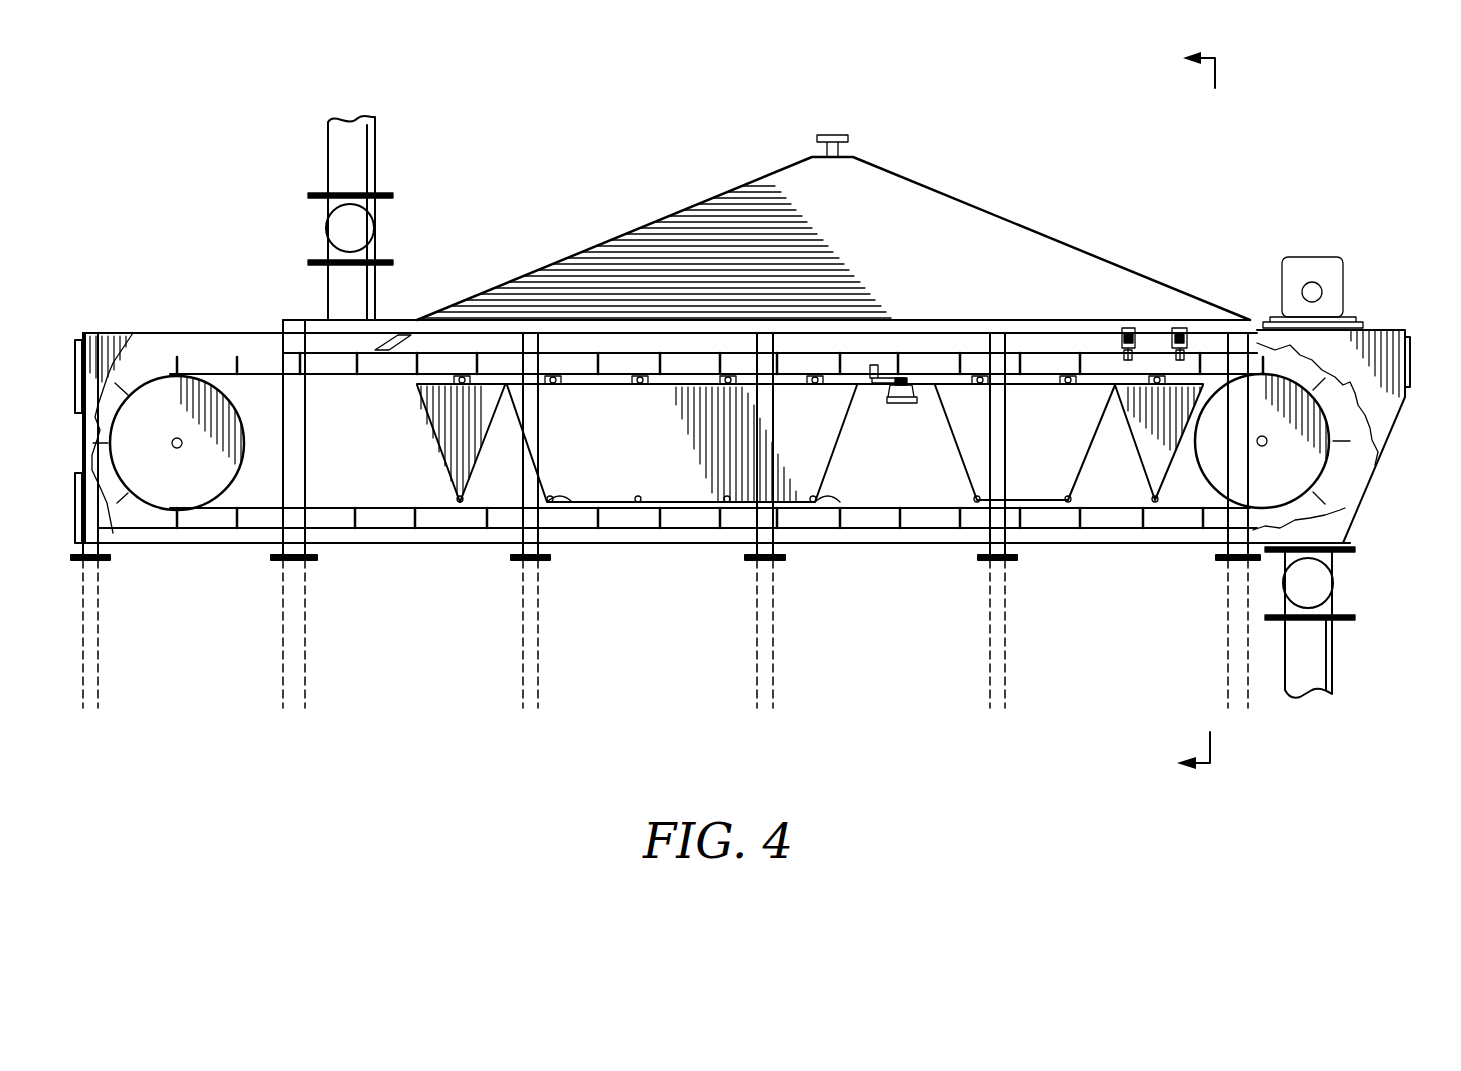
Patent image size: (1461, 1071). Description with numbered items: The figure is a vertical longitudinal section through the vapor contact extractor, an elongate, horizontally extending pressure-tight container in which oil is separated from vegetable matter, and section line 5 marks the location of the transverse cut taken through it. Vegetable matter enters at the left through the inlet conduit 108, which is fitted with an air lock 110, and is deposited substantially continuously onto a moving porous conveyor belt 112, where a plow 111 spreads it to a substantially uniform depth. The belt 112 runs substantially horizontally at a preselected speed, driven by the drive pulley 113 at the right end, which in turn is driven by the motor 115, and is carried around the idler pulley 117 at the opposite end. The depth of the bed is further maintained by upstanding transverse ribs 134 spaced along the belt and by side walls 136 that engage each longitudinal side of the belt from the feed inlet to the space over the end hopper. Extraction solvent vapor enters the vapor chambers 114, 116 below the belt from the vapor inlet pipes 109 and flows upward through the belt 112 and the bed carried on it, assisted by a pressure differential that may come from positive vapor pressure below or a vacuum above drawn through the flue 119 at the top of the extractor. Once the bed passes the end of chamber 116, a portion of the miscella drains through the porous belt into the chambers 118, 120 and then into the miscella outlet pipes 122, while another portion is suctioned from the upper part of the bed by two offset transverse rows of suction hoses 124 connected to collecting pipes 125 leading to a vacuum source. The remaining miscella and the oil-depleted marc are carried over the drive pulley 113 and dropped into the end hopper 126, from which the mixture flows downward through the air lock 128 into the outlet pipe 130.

The section line 5- 5 is at (1182, 410).
The inlet conduit 108 is at (328, 150).
The vapor inlet pipes 109 is at (565, 505).
The air lock 110 is at (327, 228).
The plow 111 is at (392, 335).
The conveyor belt 112 is at (255, 347).
The drive pulley 113 is at (1290, 468).
The vapor chamber 114 is at (432, 432).
The motor 115 is at (1312, 257).
The vapor chamber 116 is at (598, 467).
The idler pulley 117 is at (152, 400).
The chamber 118 is at (950, 450).
The flue 119 is at (833, 135).
The chamber 120 is at (1135, 470).
The miscella outlet pipes 122 is at (640, 497).
The suction hoses 124 is at (1183, 360).
The collecting pipes 125 is at (1180, 328).
The end hopper 126 is at (1350, 487).
The air lock 128 is at (1347, 578).
The outlet pipe 130 is at (1330, 655).
The transverse ribs 134 is at (950, 362).
The side walls 136 is at (497, 363).